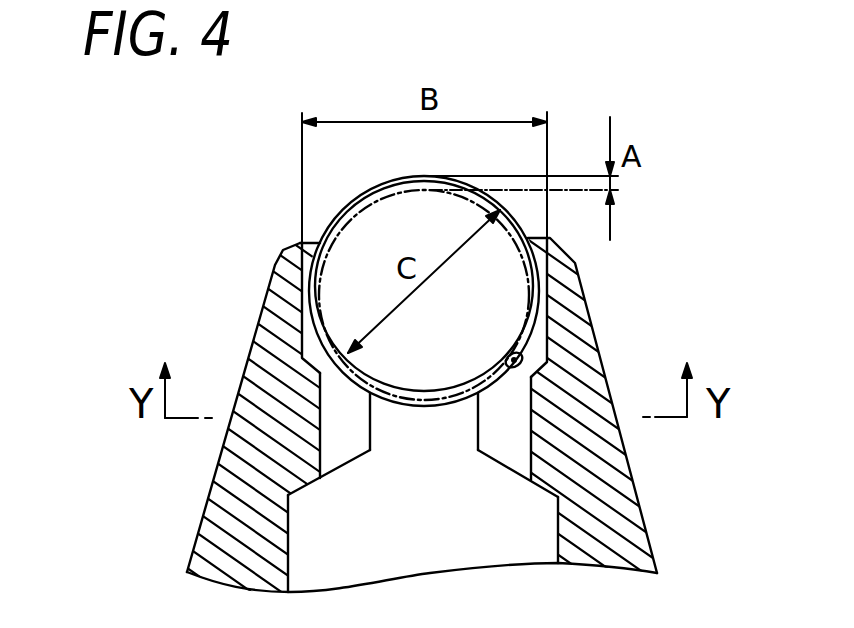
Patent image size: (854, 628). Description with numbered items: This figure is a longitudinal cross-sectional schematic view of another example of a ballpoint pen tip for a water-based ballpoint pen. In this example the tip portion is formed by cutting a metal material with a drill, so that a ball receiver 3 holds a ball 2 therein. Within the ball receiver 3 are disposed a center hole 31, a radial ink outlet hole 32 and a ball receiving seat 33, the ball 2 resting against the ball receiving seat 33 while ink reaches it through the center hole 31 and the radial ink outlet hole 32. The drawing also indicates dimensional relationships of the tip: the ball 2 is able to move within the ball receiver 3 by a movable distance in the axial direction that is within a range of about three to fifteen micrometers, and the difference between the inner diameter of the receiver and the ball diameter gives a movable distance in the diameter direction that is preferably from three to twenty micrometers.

The ball 2 is at (343, 292).
The ball receiver 3 is at (540, 336).
The center hole 31 is at (281, 482).
The radial ink outlet hole 32 is at (507, 453).
The ball receiving seat 33 is at (516, 358).